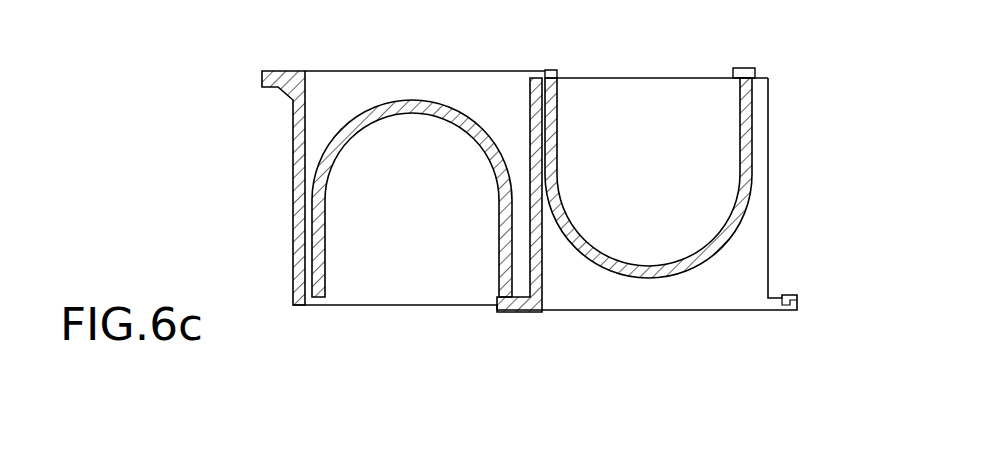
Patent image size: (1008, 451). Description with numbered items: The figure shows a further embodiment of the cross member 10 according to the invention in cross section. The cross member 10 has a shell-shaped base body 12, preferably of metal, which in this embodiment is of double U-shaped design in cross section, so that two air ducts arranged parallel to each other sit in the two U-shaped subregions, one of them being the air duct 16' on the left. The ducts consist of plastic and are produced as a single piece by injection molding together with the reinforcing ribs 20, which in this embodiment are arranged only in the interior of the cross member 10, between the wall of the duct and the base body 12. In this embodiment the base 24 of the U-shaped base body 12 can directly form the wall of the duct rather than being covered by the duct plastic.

The cross member 10 is at (188, 120).
The base body 12 is at (770, 227).
The air duct 16' is at (350, 198).
The reinforcing ribs 20 is at (333, 95).
The base 24 is at (366, 305).